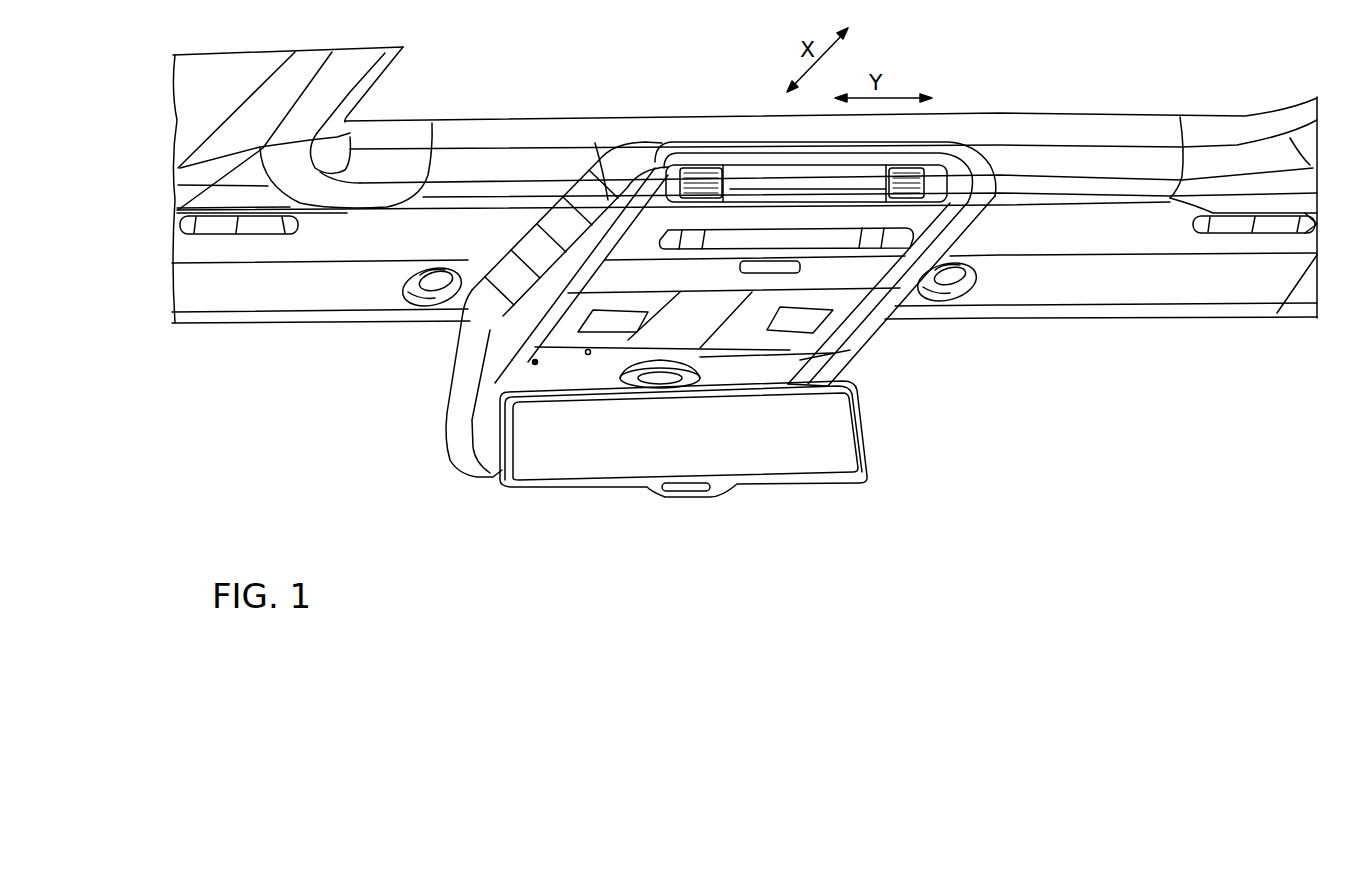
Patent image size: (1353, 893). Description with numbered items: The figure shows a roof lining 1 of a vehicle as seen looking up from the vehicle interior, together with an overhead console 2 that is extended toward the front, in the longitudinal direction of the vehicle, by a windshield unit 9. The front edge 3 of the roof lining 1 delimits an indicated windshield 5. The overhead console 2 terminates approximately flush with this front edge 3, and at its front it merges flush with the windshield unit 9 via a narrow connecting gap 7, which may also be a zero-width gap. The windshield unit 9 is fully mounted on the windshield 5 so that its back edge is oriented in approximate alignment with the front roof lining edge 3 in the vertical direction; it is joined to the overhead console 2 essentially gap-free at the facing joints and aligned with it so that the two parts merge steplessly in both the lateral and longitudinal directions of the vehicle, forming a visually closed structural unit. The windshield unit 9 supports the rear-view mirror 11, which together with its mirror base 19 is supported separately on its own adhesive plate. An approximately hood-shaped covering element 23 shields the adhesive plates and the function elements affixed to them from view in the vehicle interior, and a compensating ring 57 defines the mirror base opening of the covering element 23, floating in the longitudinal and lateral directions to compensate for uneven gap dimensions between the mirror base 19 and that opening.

The roof lining 1 is at (1080, 209).
The overhead console 2 is at (645, 281).
The front edge 3 is at (312, 323).
The windshield 5 is at (1026, 458).
The connecting gap 7 is at (588, 352).
The windshield unit 9 is at (478, 465).
The rear-view mirror 11 is at (734, 446).
The mirror base 19 is at (800, 381).
The covering element 23 is at (535, 362).
The compensating ring 57 is at (800, 362).